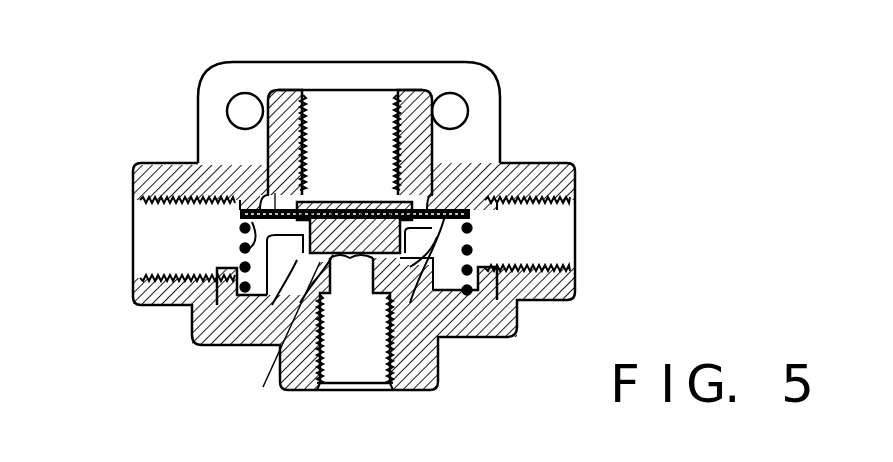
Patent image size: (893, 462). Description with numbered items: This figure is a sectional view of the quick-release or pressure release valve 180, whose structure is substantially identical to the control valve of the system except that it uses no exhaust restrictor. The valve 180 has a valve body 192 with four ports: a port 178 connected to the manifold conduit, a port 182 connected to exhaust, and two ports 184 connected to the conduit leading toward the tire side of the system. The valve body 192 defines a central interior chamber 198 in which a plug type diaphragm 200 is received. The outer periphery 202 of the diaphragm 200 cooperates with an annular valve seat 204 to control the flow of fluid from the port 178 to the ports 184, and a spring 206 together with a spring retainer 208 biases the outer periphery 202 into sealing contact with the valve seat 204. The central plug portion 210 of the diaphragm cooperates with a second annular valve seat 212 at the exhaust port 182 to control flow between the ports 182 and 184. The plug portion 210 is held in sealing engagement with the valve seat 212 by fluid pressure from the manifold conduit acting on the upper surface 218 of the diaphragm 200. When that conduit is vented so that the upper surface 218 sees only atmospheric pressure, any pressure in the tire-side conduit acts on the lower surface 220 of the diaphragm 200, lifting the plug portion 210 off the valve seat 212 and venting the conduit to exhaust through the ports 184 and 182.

The quick-release valve 180 is at (190, 88).
The port 178 is at (343, 103).
The annular valve seat 204 is at (245, 200).
The upper surface 218 is at (307, 143).
The plug type diaphragm 200 is at (358, 215).
The central interior chamber 198 is at (448, 152).
The spring 206 is at (240, 247).
The outer periphery 202 is at (470, 228).
The ports 184 is at (133, 253).
The spring retainer 208 is at (283, 297).
The central plug portion 210 is at (357, 257).
The lower surface 220 is at (432, 248).
The annular valve seat 212 is at (275, 342).
The port 182 is at (365, 348).
The valve body 192 is at (425, 357).